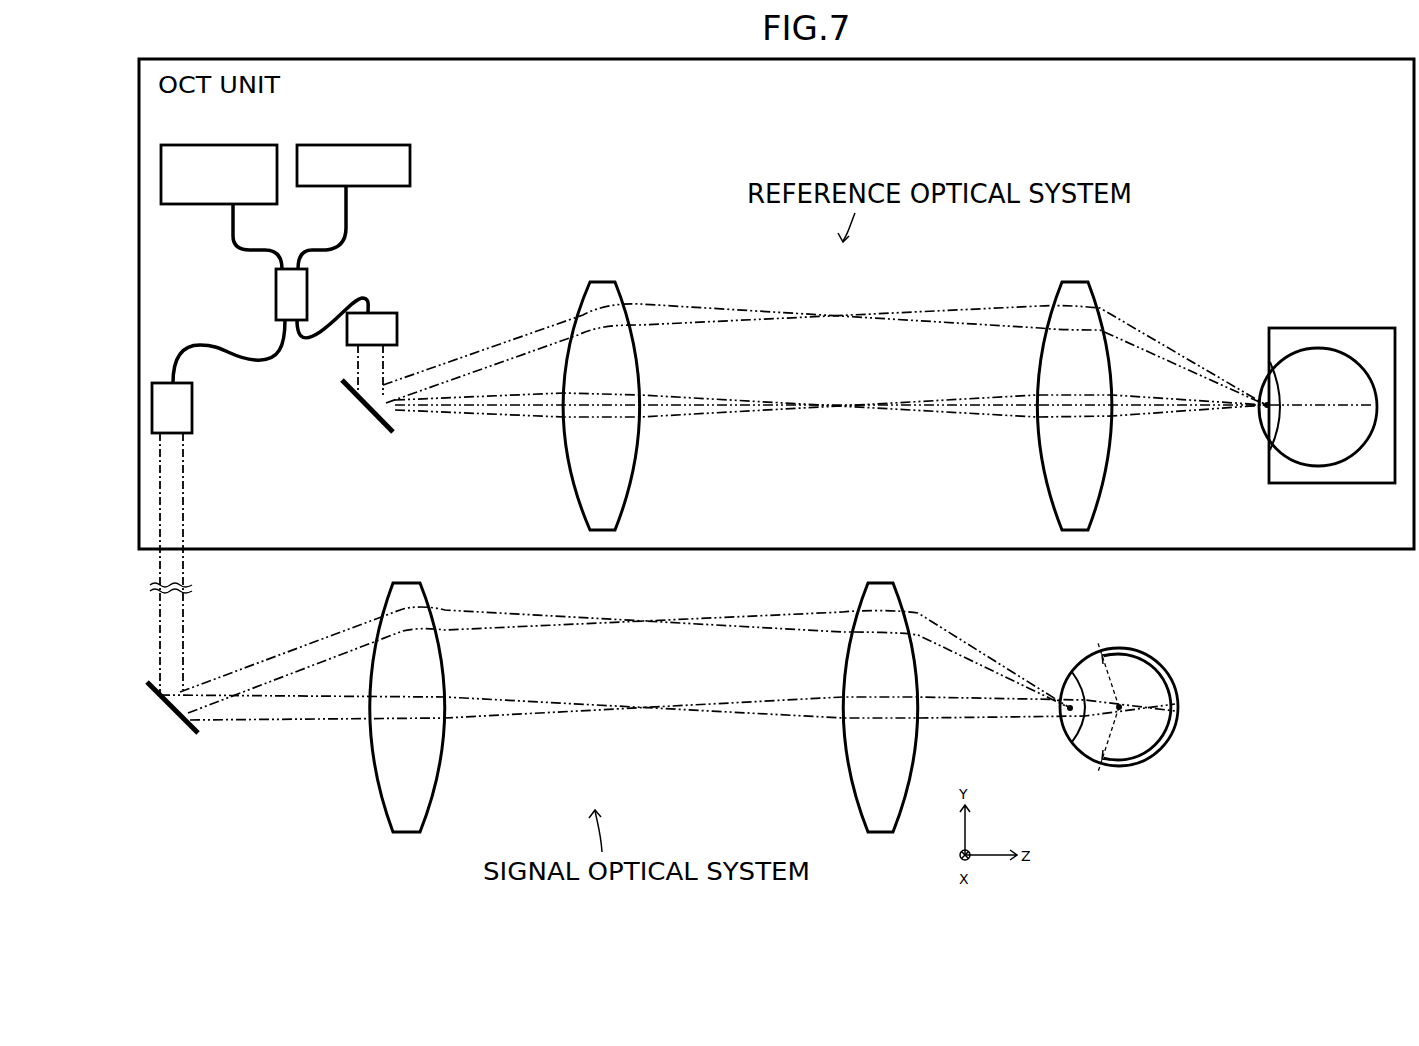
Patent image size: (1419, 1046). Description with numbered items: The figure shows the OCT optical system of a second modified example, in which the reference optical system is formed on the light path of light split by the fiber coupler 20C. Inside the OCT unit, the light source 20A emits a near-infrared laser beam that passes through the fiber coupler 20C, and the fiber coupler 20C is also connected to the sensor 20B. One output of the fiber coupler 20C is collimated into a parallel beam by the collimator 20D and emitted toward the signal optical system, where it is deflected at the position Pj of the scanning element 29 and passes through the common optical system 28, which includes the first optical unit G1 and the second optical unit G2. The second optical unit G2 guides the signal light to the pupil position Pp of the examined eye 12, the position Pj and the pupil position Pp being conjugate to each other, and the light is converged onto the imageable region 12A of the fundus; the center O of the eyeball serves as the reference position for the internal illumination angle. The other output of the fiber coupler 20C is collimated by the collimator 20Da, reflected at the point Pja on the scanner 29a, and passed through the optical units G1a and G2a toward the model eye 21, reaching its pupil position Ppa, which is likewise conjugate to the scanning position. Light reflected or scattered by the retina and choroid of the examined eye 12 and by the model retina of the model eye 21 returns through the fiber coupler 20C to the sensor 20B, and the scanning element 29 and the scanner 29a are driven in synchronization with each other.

The light source 20A is at (233, 145).
The sensor 20B is at (383, 145).
The fiber coupler 20C is at (276, 303).
The collimator 20D is at (192, 425).
The collimator 20Da is at (384, 313).
The scanner (scanning element) 29a is at (393, 433).
The reference deflection point Pja is at (364, 406).
The optical unit G1a is at (625, 512).
The optical unit G2a is at (1098, 503).
The model eye 21 is at (1367, 328).
The pupil position of the model eye Ppa is at (1266, 409).
The common optical system 28 is at (305, 618).
The scanning element 29 is at (193, 735).
The position of the scanning element Pj is at (167, 710).
The first optical unit G1 is at (405, 833).
The second optical unit G2 is at (880, 833).
The examined eye 12 is at (1142, 717).
The imageable region 12A is at (1158, 733).
The center of the eyeball O is at (1120, 705).
The pupil position Pp is at (1068, 712).